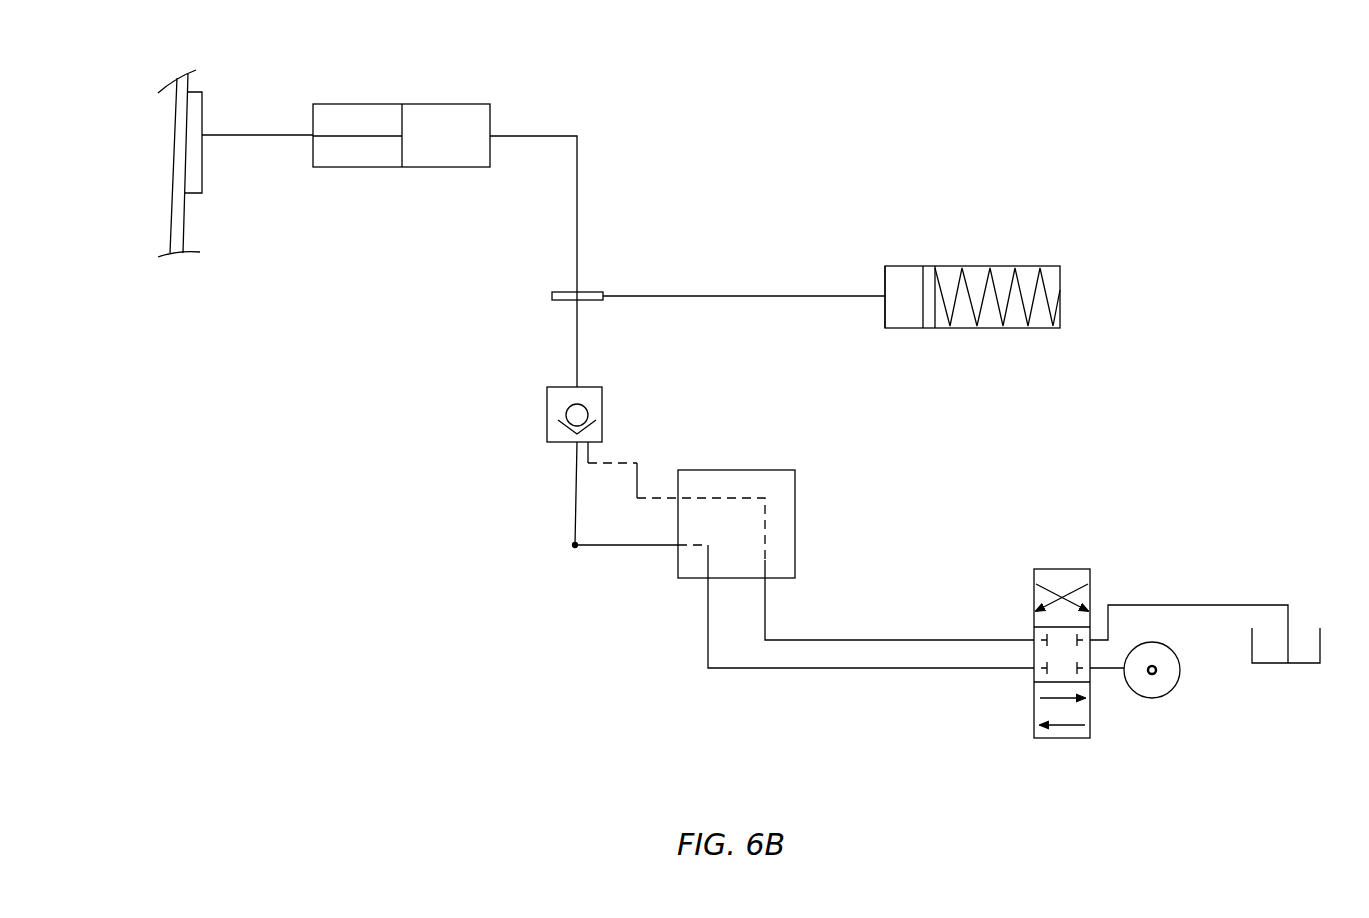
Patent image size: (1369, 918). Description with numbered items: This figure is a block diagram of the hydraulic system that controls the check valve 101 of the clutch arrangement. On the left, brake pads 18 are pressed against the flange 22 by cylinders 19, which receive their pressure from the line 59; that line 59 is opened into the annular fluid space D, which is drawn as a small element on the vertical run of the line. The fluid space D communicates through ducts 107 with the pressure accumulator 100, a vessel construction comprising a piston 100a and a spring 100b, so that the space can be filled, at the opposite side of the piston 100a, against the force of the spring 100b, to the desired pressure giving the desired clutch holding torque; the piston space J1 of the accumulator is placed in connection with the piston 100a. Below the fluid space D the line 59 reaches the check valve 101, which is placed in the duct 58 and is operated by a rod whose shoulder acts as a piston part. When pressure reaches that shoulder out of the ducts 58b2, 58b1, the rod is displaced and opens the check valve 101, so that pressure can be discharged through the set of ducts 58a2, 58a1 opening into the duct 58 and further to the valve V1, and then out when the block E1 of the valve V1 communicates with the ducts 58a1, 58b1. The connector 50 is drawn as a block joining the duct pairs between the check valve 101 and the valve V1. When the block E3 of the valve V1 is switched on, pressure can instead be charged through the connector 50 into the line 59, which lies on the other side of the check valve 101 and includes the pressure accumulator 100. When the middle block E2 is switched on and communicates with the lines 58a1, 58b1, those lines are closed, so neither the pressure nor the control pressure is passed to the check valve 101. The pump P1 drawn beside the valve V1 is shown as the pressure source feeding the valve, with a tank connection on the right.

The brake pads 18 is at (203, 101).
The cylinders 19 is at (435, 88).
The flange 22 is at (172, 222).
The line 59 is at (579, 240).
The annular fluid space D is at (552, 296).
The ducts 107 is at (744, 264).
The piston space J1 is at (885, 290).
The pressure accumulator 100 is at (970, 262).
The piston 100a is at (922, 330).
The spring 100b is at (1003, 332).
The check valve 101 is at (525, 413).
The duct 58 is at (560, 515).
The duct 58b2 is at (640, 462).
The connector 50 is at (800, 488).
The duct 58a2 is at (630, 550).
The duct 58b1 is at (767, 602).
The duct 58a1 is at (778, 670).
The valve V1 is at (1035, 552).
The block E1 is at (1030, 596).
The middle block E2 is at (1030, 651).
The block E3 is at (1030, 706).
The pump P1 is at (1148, 700).